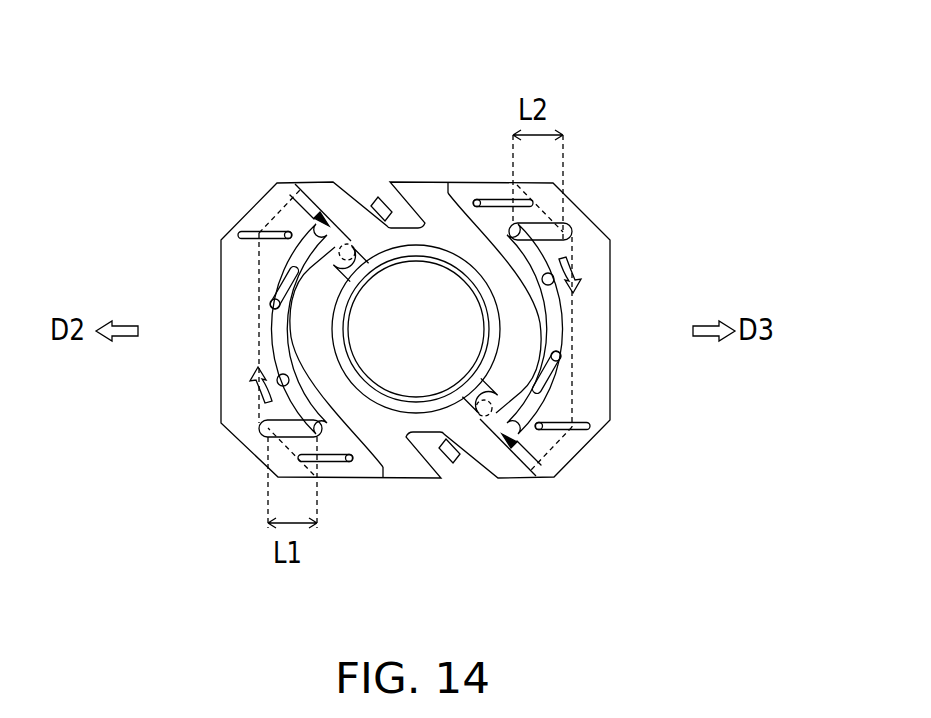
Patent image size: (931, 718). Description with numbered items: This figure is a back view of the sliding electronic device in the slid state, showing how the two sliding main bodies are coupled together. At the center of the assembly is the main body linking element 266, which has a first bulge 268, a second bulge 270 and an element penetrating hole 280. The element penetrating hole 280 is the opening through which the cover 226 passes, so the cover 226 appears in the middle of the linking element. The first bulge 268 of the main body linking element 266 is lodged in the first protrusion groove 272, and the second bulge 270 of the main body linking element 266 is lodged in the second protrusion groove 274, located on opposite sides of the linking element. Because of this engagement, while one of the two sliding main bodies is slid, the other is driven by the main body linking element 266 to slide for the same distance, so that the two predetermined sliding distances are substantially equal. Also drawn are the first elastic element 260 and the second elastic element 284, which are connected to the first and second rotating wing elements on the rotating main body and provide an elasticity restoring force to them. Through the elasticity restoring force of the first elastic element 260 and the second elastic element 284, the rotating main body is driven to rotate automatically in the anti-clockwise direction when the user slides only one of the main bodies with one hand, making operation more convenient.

The cover 226 is at (407, 373).
The first elastic element 260 is at (387, 197).
The main body linking element 266 is at (500, 60).
The first bulge 268 is at (357, 242).
The second bulge 270 is at (480, 400).
The first protrusion groove 272 is at (292, 192).
The second protrusion groove 274 is at (497, 437).
The element penetrating hole 280 is at (412, 285).
The second elastic element 284 is at (438, 457).